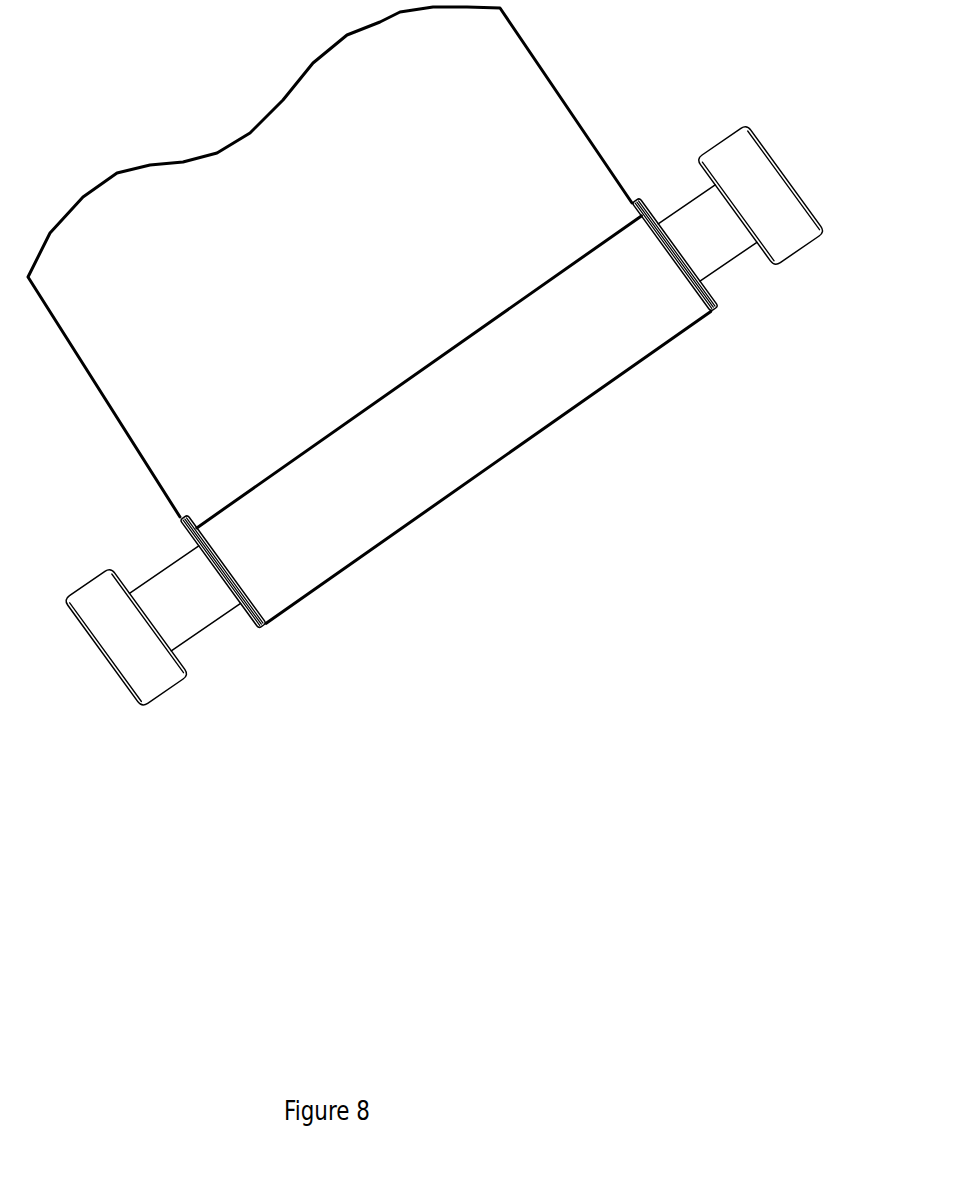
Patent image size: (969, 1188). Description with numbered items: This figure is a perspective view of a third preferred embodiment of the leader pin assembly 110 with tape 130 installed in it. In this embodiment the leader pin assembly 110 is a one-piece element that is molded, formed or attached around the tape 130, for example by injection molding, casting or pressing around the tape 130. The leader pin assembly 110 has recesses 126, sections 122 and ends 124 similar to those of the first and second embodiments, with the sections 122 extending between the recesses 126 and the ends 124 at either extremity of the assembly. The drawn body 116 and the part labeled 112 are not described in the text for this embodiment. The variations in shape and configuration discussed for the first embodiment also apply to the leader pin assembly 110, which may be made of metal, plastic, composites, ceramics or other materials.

The leader pin assembly 110 is at (195, 758).
The roller unit 112 is at (150, 707).
The roller 116 is at (623, 375).
The section 122 is at (725, 262).
The end 124 is at (797, 228).
The recess 126 is at (682, 192).
The tape 130 is at (520, 107).